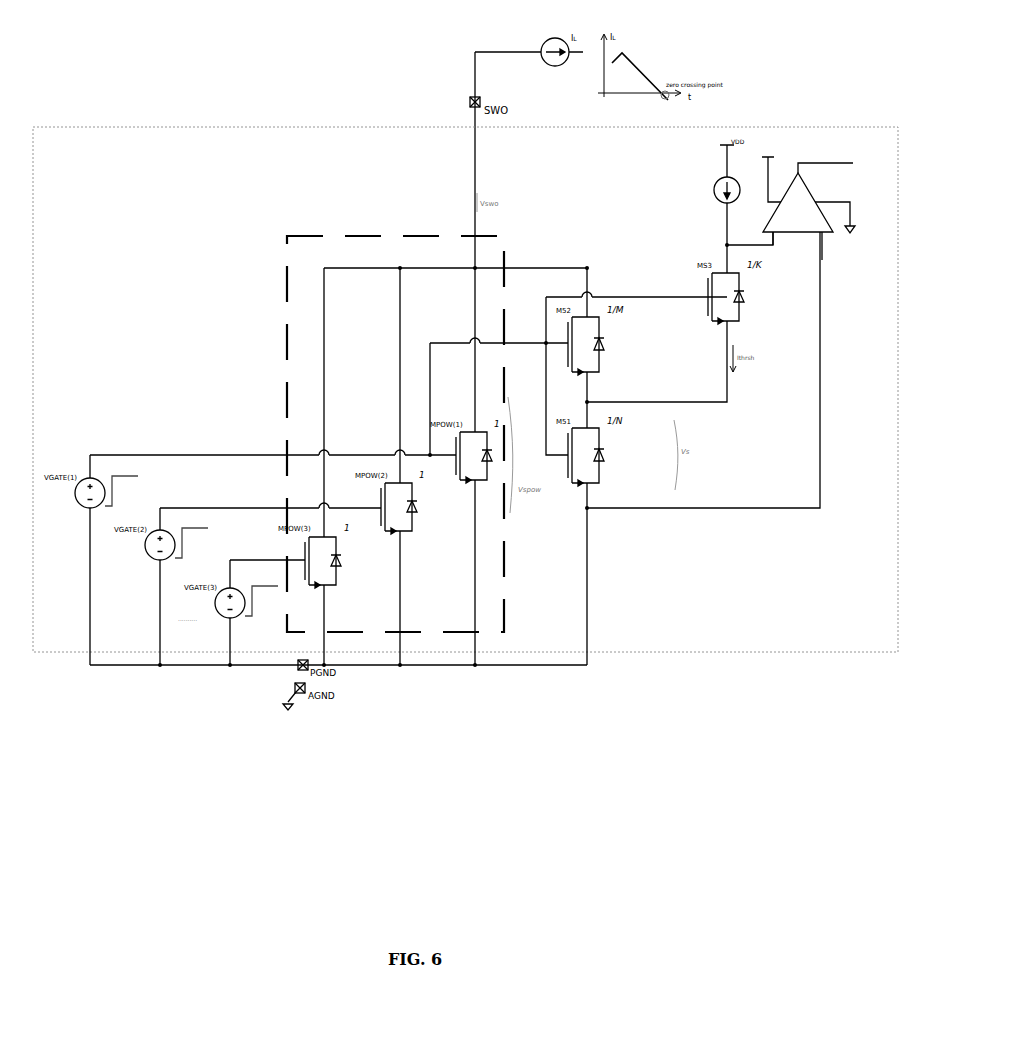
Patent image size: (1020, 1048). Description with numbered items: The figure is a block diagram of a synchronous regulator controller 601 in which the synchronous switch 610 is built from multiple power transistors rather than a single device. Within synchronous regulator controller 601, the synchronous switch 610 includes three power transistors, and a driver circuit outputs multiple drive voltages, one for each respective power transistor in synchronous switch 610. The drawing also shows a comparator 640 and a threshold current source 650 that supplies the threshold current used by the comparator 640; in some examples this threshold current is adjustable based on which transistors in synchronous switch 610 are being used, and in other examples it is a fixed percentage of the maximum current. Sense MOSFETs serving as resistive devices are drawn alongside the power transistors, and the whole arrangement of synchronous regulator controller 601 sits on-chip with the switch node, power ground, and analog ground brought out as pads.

The synchronous regulator controller 601 is at (465, 389).
The synchronous switch 610 is at (395, 434).
The comparator 640 is at (802, 236).
The threshold current source 650 is at (714, 190).